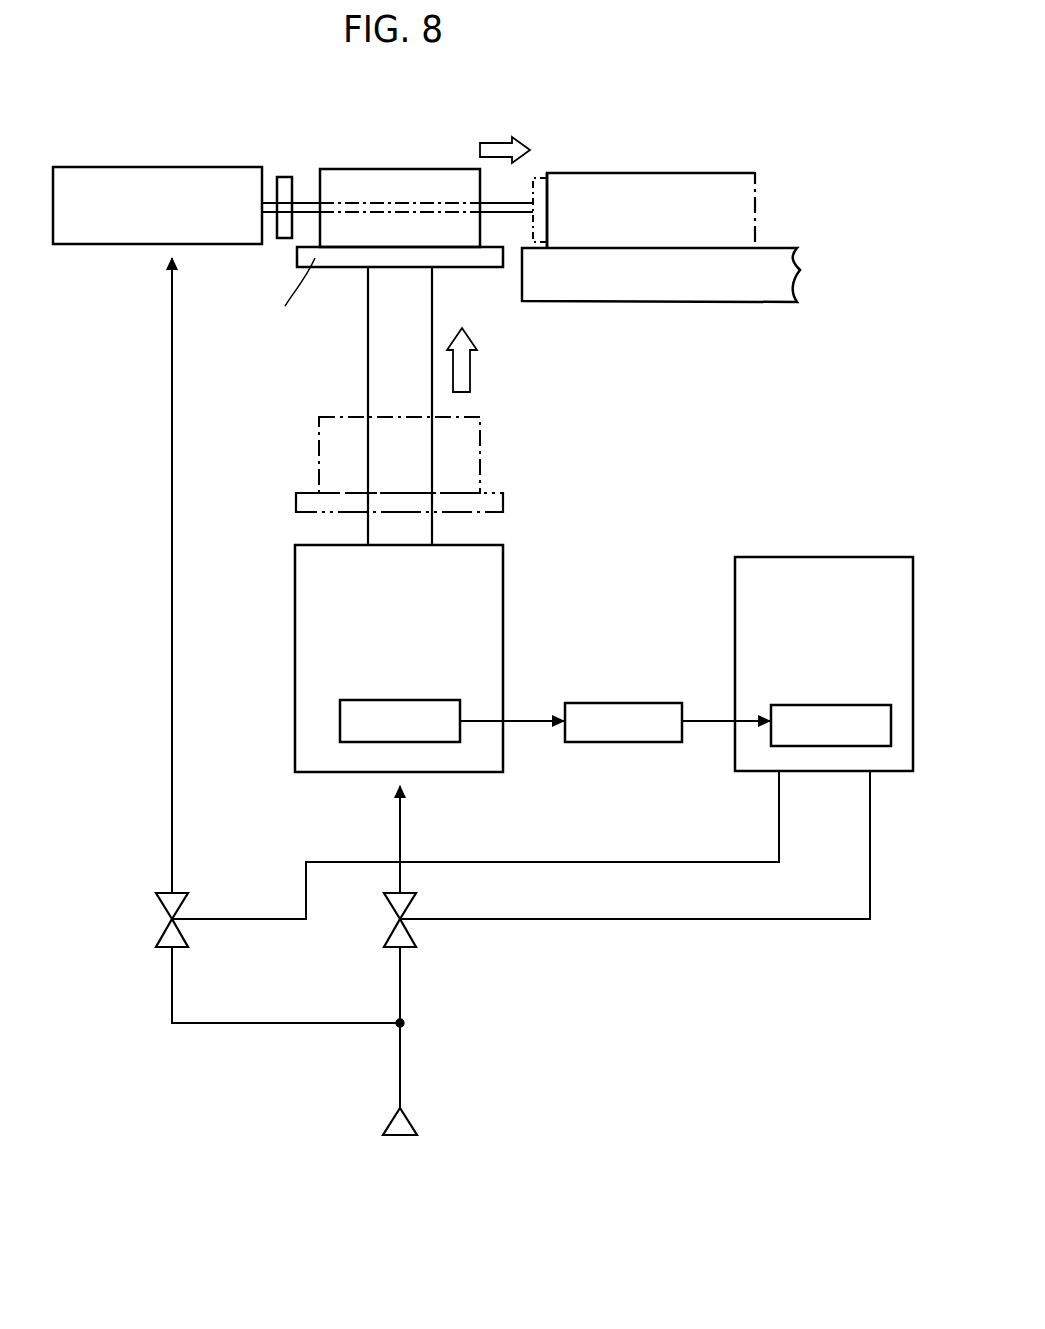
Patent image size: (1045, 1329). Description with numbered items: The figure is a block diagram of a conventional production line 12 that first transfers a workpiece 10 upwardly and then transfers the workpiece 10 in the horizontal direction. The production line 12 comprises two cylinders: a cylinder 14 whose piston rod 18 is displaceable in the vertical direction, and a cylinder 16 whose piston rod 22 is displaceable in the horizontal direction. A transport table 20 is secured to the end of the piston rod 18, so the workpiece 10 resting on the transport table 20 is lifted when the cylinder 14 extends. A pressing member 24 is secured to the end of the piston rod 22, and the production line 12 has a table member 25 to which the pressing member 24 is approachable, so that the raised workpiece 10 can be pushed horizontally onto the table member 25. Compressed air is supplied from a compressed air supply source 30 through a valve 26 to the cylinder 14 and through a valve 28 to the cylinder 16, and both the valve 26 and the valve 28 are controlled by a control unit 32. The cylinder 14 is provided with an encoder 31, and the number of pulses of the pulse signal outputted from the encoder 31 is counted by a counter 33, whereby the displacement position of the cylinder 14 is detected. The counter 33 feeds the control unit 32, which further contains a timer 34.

The workpiece 10 is at (405, 170).
The production line 12 is at (657, 68).
The cylinder 14 is at (506, 604).
The cylinder 16 is at (132, 252).
The piston rod 18 is at (392, 357).
The transport table 20 is at (328, 256).
The piston rod 22 is at (273, 200).
The pressing member 24 is at (286, 180).
The table member 25 is at (592, 285).
The valve 26 is at (413, 906).
The valve 28 is at (184, 906).
The compressed air supply source 30 is at (416, 1125).
The encoder 31 is at (436, 700).
The control unit 32 is at (806, 575).
The counter 33 is at (668, 703).
The timer 34 is at (866, 705).